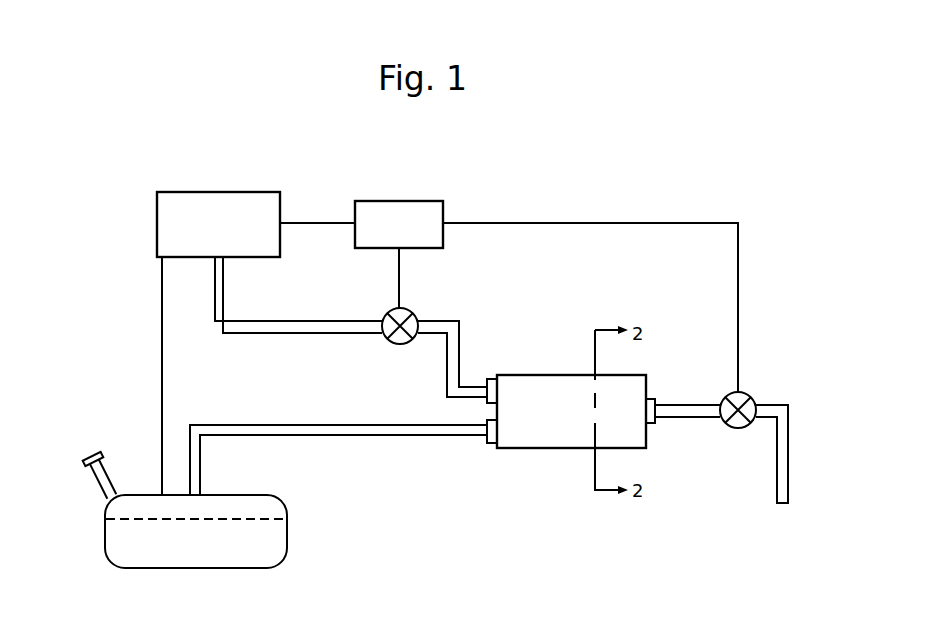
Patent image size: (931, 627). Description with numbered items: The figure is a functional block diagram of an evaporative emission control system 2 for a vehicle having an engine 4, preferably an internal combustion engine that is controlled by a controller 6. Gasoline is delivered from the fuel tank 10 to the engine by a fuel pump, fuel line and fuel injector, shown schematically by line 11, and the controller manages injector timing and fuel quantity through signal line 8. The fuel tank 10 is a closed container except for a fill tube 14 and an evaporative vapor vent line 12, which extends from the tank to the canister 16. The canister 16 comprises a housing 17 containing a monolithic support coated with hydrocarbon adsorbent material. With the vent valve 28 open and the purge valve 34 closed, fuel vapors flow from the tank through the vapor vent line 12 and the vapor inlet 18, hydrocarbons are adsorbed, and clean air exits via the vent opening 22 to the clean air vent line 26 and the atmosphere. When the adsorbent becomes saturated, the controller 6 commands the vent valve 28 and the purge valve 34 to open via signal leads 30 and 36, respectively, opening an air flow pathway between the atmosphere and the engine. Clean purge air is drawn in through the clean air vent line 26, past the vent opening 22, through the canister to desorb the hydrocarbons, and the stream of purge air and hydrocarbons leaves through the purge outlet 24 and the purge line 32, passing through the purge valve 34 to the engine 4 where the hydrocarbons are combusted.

The evaporative emission control system 2 is at (126, 192).
The engine 4 is at (218, 192).
The controller 6 is at (420, 201).
The signal line 8 is at (317, 223).
The fuel tank 10 is at (285, 560).
The line 11 is at (162, 388).
The evaporative vapor vent line 12 is at (352, 437).
The fill tube 14 is at (100, 482).
The canister 16 is at (574, 474).
The housing 17 is at (540, 449).
The vapor inlet 18 is at (490, 443).
The vent opening 22 is at (656, 423).
The purge outlet 24 is at (488, 378).
The clean air vent line 26 is at (788, 445).
The vent valve 28 is at (748, 393).
The signal lead 30 is at (553, 223).
The purge line 32 is at (447, 320).
The purge valve 34 is at (398, 345).
The signal lead 36 is at (399, 270).